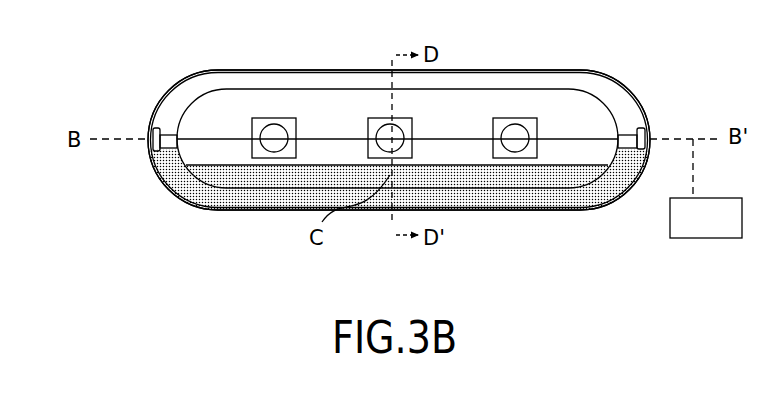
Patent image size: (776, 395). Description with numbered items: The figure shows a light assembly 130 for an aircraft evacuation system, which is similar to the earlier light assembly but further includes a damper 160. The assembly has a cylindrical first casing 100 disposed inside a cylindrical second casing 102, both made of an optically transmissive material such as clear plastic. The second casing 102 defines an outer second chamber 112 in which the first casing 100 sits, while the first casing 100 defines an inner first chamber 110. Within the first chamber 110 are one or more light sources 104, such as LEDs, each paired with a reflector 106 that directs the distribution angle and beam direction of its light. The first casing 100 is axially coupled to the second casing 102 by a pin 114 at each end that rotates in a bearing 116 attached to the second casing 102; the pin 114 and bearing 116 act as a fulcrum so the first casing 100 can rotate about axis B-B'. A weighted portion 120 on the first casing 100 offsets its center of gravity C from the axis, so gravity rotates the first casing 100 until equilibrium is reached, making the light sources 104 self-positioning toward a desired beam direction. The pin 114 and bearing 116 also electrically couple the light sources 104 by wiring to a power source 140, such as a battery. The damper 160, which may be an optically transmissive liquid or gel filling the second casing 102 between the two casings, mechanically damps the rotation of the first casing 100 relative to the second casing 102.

The light assembly 130 is at (118, 46).
The second casing 102 is at (229, 70).
The second chamber 112 is at (214, 82).
The first casing 100 is at (297, 88).
The first chamber 110 is at (328, 117).
The light source 104 is at (507, 128).
The reflector 106 is at (531, 118).
The pin 114 is at (165, 150).
The bearing 116 is at (646, 132).
The weighted portion 120 is at (440, 178).
The power source 140 is at (706, 218).
The damper 160 is at (595, 190).